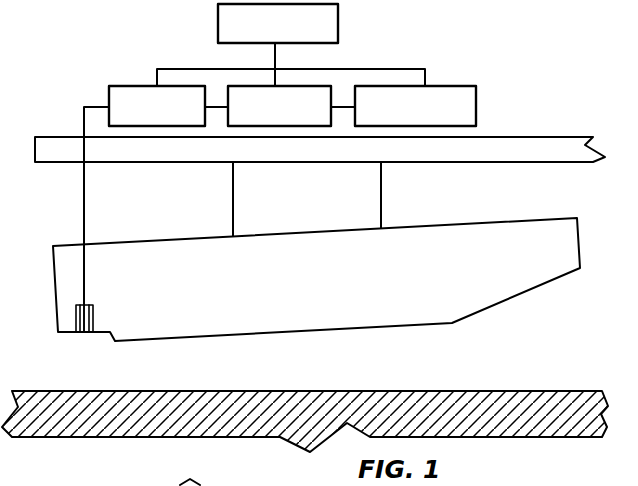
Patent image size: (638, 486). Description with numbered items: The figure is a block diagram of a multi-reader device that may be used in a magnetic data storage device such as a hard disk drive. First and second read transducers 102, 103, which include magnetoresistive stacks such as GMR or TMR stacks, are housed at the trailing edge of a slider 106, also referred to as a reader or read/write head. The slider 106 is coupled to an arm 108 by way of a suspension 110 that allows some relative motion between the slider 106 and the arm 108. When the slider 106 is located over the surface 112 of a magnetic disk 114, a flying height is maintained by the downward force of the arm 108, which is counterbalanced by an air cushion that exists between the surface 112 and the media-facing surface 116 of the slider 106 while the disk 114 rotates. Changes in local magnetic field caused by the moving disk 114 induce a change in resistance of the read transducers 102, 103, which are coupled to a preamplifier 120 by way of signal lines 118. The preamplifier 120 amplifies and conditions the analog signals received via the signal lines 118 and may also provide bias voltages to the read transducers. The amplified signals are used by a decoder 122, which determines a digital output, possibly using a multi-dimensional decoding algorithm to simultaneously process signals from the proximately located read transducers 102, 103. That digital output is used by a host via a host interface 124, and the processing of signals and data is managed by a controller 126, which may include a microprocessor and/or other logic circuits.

The first read transducer 102 is at (78, 327).
The second read transducer 103 is at (87, 332).
The slider 106 is at (490, 228).
The arm 108 is at (533, 143).
The suspension 110 is at (381, 192).
The surface 112 is at (493, 390).
The magnetic disk 114 is at (468, 425).
The media-facing surface 116 is at (336, 328).
The signal lines 118 is at (84, 196).
The preamplifier 120 is at (124, 86).
The decoder 122 is at (250, 86).
The host interface 124 is at (443, 86).
The controller 126 is at (217, 10).